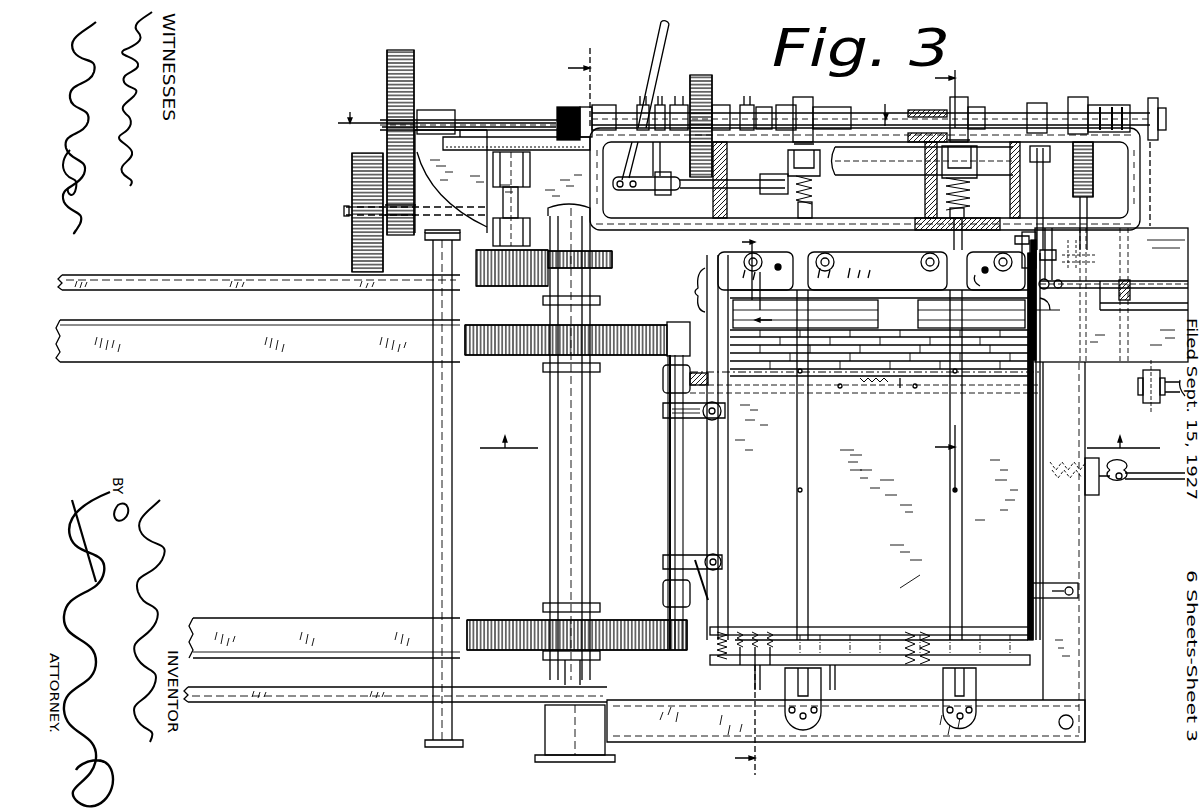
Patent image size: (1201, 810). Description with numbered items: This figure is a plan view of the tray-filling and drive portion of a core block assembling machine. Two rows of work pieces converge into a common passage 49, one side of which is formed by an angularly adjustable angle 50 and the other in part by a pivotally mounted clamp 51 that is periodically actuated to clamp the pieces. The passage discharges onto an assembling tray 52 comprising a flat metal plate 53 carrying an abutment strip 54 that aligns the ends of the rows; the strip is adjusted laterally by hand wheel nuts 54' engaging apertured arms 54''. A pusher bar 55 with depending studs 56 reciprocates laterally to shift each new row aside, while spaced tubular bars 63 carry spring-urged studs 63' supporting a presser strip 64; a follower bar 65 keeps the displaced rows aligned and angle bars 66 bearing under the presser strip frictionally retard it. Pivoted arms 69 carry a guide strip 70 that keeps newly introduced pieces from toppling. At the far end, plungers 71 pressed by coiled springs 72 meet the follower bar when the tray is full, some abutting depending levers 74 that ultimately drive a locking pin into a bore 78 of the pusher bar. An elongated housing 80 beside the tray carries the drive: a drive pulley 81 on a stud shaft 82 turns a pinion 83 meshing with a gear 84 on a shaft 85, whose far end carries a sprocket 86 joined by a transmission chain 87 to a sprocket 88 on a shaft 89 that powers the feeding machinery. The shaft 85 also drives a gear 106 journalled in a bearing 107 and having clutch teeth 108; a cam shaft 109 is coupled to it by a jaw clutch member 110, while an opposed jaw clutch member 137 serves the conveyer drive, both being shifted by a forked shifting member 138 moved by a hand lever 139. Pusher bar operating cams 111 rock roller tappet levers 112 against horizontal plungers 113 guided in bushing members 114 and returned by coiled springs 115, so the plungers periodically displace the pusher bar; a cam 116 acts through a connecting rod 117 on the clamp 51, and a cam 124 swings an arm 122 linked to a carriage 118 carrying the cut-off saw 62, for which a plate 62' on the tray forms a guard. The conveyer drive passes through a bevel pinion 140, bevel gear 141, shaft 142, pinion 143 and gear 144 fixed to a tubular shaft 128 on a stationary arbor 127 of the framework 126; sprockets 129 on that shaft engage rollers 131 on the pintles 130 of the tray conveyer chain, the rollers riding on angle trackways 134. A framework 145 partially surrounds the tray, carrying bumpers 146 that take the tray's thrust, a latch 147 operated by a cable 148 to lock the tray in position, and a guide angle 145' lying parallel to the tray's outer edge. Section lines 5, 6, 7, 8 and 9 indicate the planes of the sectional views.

The section line 5- 5 is at (665, 417).
The section line 6- 6 is at (820, 447).
The section line 7- 7 is at (612, 115).
The section line 8- 8 is at (945, 271).
The section line 9- 9 is at (752, 286).
The common channel or passage 49 is at (1045, 312).
The angularly adjustable angle 50 is at (1042, 322).
The pivotally mounted clamp 51 is at (1057, 274).
The assembling tray 52 is at (685, 290).
The flat metal plate 53 is at (906, 518).
The abutment strip or stop 54 is at (865, 446).
The hand wheel nuts 54' is at (692, 565).
The apertured arms 54'' is at (694, 423).
The pusher bar 55 is at (873, 262).
The depending studs 56 is at (983, 280).
The cut-off saw 62 is at (1018, 248).
The plate 62' is at (1057, 254).
The tubular bars 63 is at (969, 465).
The depending studs 63' is at (819, 465).
The presser strip 64 is at (809, 567).
The follower bar 65 is at (898, 390).
The angle bars 66 is at (905, 386).
The pivotally mounted arms 69 is at (770, 278).
The guide strip 70 is at (918, 312).
The plungers 71 is at (738, 660).
The coiled springs 72 is at (908, 628).
The depending levers 74 is at (756, 682).
The bore 78 is at (756, 256).
The elongated housing 80 is at (880, 150).
The drive pulley 81 is at (362, 170).
The stud shaft 82 is at (345, 212).
The pinion 83 is at (404, 226).
The gear 84 is at (410, 70).
The shaft 85 is at (519, 122).
The sprocket 86 is at (1155, 92).
The transmission chain 87 is at (1150, 206).
The sprocket 88 is at (1152, 403).
The shaft 89 is at (1173, 400).
The gear 106 is at (708, 86).
The bearing 107 is at (722, 106).
The clutch teeth 108 is at (683, 106).
The cam shaft 109 is at (880, 100).
The jaw clutch member 110 is at (750, 106).
The pusher bar operating cams 111 is at (818, 84).
The roller tappet lever 112 is at (788, 162).
The horizontal plunger 113 is at (953, 238).
The bushing member 114 is at (796, 210).
The coiled spring 115 is at (970, 192).
The cam 116 is at (1045, 90).
The connecting rod 117 is at (1044, 206).
The carriage 118 is at (1128, 255).
The arm 122 is at (1090, 186).
The cam 124 is at (1088, 92).
The framework 126 is at (205, 290).
The stationary horizontal arbors 127 is at (586, 688).
The tubular shaft 128 is at (578, 456).
The sprockets 129 is at (645, 357).
The pintles 130 is at (668, 504).
The rollers 131 is at (665, 616).
The angle trackways 134 is at (226, 352).
The jaw clutch member 137 is at (640, 106).
The forked shifting member 138 is at (712, 188).
The hand lever 139 is at (658, 56).
The bevel pinion 140 is at (570, 90).
The bevel gear 141 is at (530, 152).
The shaft 142 is at (520, 207).
The pinion 143 is at (485, 284).
The gear 144 is at (614, 261).
The framework 145 is at (867, 564).
The guide angle 145' is at (1078, 440).
The bumpers 146 is at (943, 688).
The latch 147 is at (1090, 496).
The cable 148 is at (1160, 478).